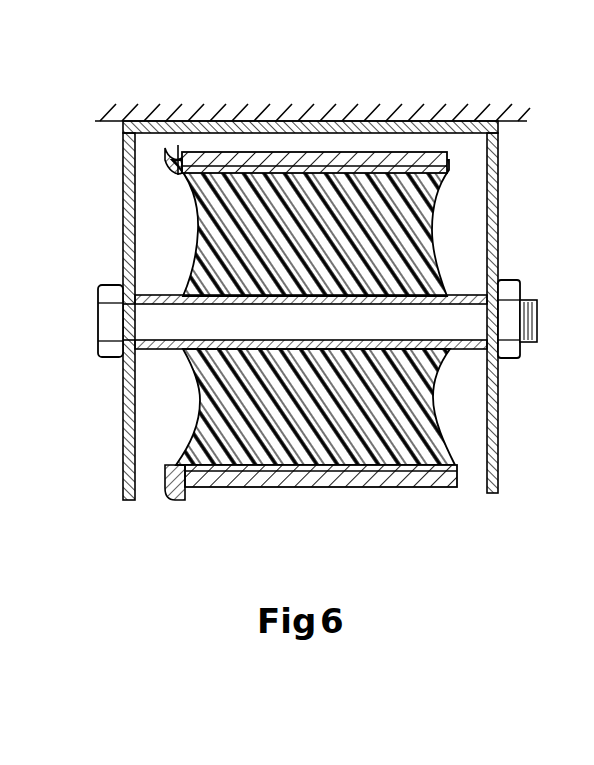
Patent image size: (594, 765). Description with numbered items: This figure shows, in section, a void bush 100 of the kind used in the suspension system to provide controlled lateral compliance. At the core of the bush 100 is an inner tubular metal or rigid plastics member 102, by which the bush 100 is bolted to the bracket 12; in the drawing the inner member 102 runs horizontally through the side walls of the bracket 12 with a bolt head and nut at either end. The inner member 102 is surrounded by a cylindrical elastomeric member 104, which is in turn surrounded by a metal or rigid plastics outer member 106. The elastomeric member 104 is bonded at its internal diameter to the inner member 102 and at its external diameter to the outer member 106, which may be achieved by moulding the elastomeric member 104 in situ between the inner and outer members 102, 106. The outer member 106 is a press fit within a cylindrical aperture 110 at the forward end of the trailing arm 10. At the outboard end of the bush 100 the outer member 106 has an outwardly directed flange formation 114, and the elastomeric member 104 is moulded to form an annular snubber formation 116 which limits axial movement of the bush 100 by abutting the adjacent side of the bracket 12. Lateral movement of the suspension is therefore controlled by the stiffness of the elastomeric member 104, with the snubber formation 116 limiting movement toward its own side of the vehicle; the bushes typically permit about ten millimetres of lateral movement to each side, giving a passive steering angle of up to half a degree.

The trailing arm 10 is at (293, 318).
The bracket 12 is at (492, 202).
The void bush 100 is at (293, 318).
The inner member 102 is at (496, 270).
The elastomeric member 104 is at (200, 397).
The outer member 106 is at (286, 168).
The cylindrical aperture 110 is at (372, 478).
The flange formation 114 is at (178, 160).
The snubber formation 116 is at (168, 500).